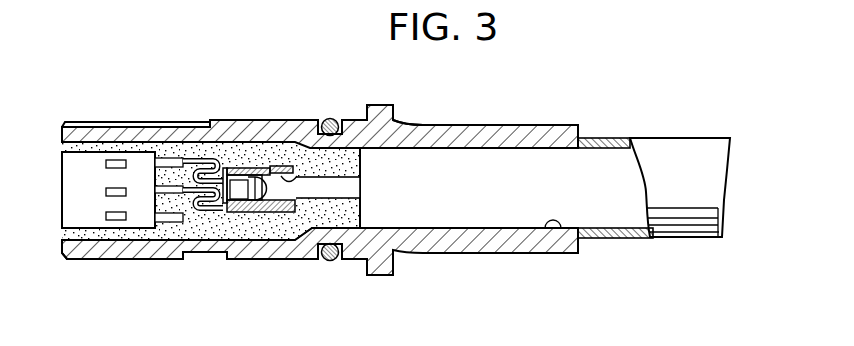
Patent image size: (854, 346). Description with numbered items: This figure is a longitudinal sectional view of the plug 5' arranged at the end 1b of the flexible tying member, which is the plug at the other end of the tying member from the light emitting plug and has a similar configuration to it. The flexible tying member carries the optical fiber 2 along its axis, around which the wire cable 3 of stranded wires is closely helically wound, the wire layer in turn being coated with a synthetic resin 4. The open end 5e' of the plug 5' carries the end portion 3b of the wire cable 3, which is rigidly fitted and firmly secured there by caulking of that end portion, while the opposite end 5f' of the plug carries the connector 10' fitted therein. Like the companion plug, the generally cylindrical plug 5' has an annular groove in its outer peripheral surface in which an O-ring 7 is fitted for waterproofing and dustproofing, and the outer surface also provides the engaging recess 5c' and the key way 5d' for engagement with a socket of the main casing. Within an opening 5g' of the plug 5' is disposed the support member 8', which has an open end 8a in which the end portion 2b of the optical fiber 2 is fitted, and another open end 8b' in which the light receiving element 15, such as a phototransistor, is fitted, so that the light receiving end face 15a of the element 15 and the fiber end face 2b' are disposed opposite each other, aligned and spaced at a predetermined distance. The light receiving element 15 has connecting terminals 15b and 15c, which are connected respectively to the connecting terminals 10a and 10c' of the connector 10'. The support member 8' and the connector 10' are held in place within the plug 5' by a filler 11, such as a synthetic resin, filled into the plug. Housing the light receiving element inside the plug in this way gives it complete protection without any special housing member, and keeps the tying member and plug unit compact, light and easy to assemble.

The optical fiber 2 is at (392, 274).
The end portion of the optical fiber 2b is at (353, 288).
The O-ring groove 2b' is at (326, 265).
The wire cable 3 is at (612, 167).
The end portion of the wire cable 3b is at (468, 212).
The synthetic resin 4 is at (617, 240).
The plug 5' is at (485, 100).
The sleeve notch 5c' is at (202, 291).
The sleeve lip 5d' is at (136, 101).
The open end of the plug 5e' is at (509, 268).
The opposite end of the plug 5f' is at (122, 277).
The opening of the plug 5g' is at (130, 281).
The O-ring 7 is at (332, 118).
The support member 8' is at (298, 263).
The open end of the support member 8a is at (310, 177).
The opposite open end of the support member 8b' is at (248, 134).
The connector 10' is at (108, 152).
The contact terminals 10a is at (187, 160).
The connecting terminal of the connector 10c' is at (183, 289).
The filler 11 is at (248, 228).
The light receiving element 15 is at (247, 175).
The light receiving end face 15a is at (272, 175).
The connecting terminal of the light receiving element 15b is at (222, 162).
The connecting terminal of the light receiving element 15c is at (214, 232).
The end of the flexible tying member 1b is at (590, 138).